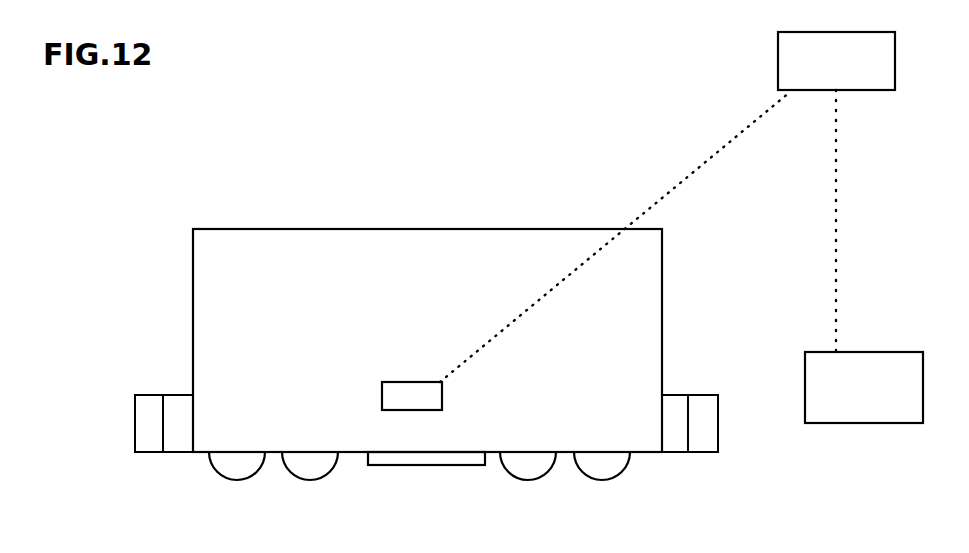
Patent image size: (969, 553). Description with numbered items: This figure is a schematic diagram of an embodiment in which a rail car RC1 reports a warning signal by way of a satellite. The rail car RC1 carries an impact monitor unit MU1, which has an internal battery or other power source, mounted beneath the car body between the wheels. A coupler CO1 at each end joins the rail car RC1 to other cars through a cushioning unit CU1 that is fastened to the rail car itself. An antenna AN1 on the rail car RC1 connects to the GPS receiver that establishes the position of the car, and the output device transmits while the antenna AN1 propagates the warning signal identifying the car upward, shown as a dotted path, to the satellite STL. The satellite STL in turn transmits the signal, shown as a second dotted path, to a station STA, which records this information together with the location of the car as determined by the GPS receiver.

The rail car RC1 is at (253, 244).
The coupler CO1 is at (150, 412).
The cushioning unit CU1 is at (178, 437).
The impact monitor unit MU1 is at (455, 467).
The antenna AN1 is at (412, 395).
The satellite STL is at (865, 75).
The station STA is at (885, 370).